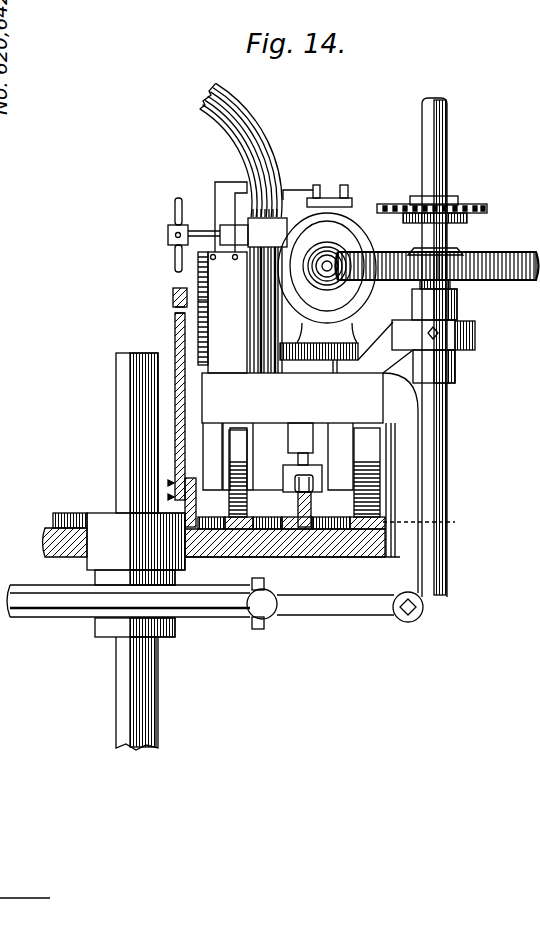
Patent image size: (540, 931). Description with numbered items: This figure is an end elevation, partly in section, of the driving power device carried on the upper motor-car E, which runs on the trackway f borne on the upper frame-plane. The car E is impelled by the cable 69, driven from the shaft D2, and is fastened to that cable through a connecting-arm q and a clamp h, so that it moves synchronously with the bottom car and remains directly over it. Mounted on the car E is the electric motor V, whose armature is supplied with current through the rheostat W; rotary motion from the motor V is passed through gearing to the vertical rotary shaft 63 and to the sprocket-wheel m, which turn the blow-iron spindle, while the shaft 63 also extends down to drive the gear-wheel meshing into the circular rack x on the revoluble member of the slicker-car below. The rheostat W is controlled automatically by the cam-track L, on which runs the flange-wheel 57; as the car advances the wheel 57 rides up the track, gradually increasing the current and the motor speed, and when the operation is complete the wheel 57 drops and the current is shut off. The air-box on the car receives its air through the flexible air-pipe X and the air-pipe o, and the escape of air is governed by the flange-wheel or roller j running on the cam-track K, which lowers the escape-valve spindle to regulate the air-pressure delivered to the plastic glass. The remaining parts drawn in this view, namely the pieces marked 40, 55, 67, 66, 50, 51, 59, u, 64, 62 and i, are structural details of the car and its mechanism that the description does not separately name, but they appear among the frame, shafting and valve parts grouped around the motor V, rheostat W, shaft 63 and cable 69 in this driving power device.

The flexible air-pipe X is at (242, 150).
The bracket 40 is at (231, 209).
The rheostat W is at (227, 312).
The rack teeth 55 is at (195, 308).
The rack tooth 67 is at (201, 303).
The air-pipe o is at (265, 337).
The box 66 is at (373, 284).
The rod 50 is at (204, 226).
The handle 51 is at (175, 227).
The bracket 59 is at (317, 186).
The electric motor V is at (345, 293).
The hub u is at (322, 268).
The circular rack x is at (437, 257).
The vertical rotary shaft 63 is at (448, 347).
The sprocket-wheel m is at (444, 242).
The block 64 is at (424, 319).
The block 62 is at (445, 366).
The upper motor-car E is at (292, 398).
The connecting-arm q is at (400, 483).
The trackway f is at (212, 505).
The flange-wheel 57 is at (175, 319).
The cam-track L is at (205, 456).
The rack i is at (301, 470).
The flange-wheel j is at (296, 487).
The cam-track K is at (312, 501).
The shaft D2 is at (158, 663).
The cable 69 is at (142, 600).
The clamp h is at (350, 600).